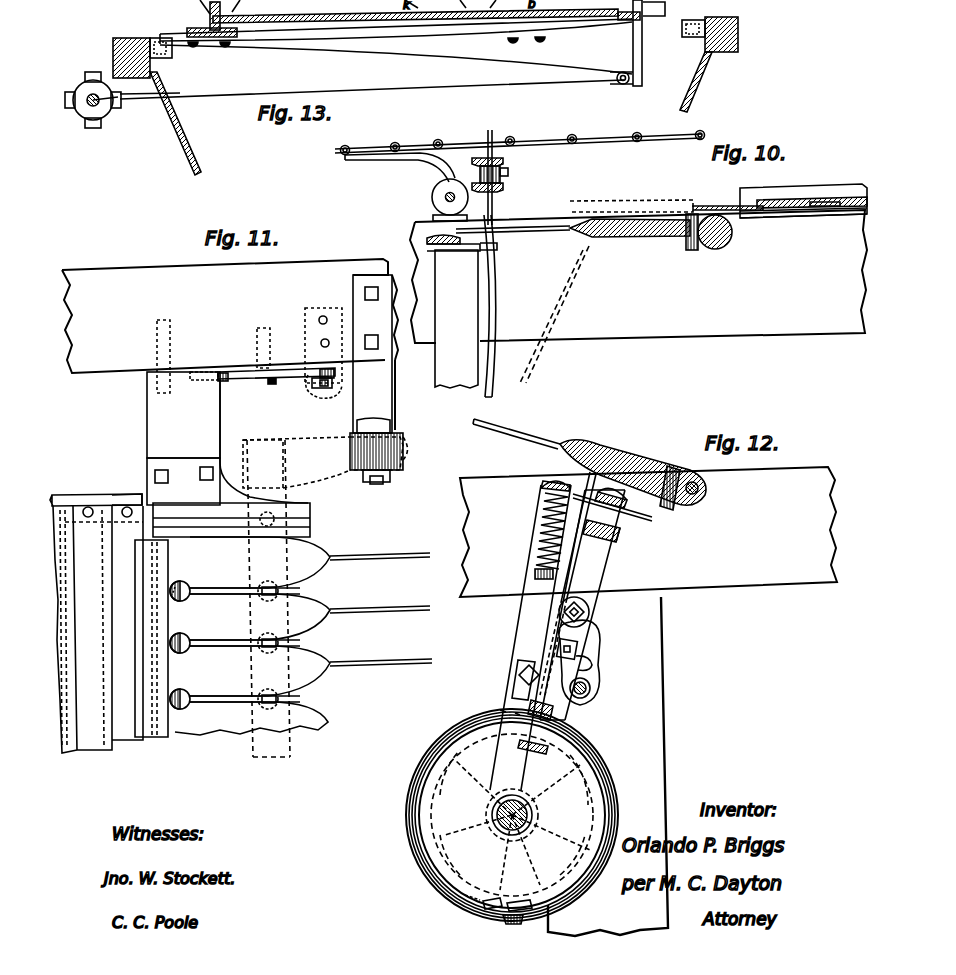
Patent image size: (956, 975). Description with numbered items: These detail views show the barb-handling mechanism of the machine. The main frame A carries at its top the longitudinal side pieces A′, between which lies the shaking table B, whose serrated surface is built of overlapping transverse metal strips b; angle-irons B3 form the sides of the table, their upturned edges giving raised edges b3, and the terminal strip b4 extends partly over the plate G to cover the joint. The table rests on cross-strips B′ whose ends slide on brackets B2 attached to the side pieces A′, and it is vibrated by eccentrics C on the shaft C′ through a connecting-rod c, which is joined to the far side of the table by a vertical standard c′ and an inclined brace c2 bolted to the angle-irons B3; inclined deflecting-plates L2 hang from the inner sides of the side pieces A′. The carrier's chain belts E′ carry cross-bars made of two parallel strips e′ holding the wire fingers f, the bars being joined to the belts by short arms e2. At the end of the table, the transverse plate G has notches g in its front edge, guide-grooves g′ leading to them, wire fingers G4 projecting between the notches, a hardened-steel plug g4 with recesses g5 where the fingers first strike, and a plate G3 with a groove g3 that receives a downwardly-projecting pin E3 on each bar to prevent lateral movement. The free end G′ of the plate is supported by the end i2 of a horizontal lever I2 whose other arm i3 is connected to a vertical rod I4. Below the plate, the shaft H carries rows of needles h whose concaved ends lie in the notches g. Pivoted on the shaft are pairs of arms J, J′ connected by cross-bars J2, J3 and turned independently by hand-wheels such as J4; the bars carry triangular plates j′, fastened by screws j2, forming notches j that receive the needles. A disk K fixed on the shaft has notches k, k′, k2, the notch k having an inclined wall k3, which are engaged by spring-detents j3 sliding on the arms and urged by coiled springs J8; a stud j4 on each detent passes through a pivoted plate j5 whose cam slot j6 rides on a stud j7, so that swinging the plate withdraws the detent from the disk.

In FIG. 13, the main frame A is at (735, 30).
In FIG. 13, the longitudinal side pieces A′ is at (112, 52).
In FIG. 10, the longitudinal side pieces A′ is at (638, 276).
In FIG. 11, the longitudinal side pieces A′ is at (230, 346).
In FIG. 12, the longitudinal side pieces A′ is at (648, 532).
In FIG. 10, the shaking table B is at (783, 200).
In FIG. 11, the shaking table B is at (138, 653).
In FIG. 13, the cross-strips B′ is at (562, 29).
In FIG. 13, the brackets B2 is at (166, 56).
In FIG. 10, the angle-irons B3 is at (804, 216).
In FIG. 11, the angle-irons B3 is at (103, 495).
In FIG. 13, the transverse metal strips b is at (415, 16).
In FIG. 10, the transverse metal strips b is at (853, 200).
In FIG. 11, the transverse metal strips b is at (98, 629).
In FIG. 10, the raised edges b3 is at (825, 200).
In FIG. 11, the raised edges b3 is at (135, 495).
In FIG. 10, the terminal strip b4 is at (718, 206).
In FIG. 11, the terminal strip b4 is at (165, 612).
In FIG. 13, the eccentrics C is at (78, 112).
In FIG. 13, the eccentric shaft C′ is at (103, 104).
In FIG. 13, the connecting-rod c is at (395, 88).
In FIG. 13, the vertical standard c′ is at (642, 44).
In FIG. 13, the inclined brace c2 is at (423, 52).
In FIG. 10, the chain belts E′ is at (592, 138).
In FIG. 11, the downwardly-projecting pin E3 is at (404, 468).
In FIG. 10, the parallel metal strips e′ is at (504, 160).
In FIG. 10, the short arms e2 is at (420, 166).
In FIG. 10, the fingers f is at (494, 200).
In FIG. 10, the transverse metal plate G is at (642, 236).
In FIG. 11, the transverse metal plate G is at (252, 636).
In FIG. 12, the transverse metal plate G is at (636, 462).
In FIG. 11, the end of the plate G′ is at (183, 415).
In FIG. 11, the guide plate G3 is at (320, 518).
In FIG. 10, the forwardly-projecting fingers G4 is at (527, 224).
In FIG. 11, the forwardly-projecting fingers G4 is at (402, 559).
In FIG. 12, the forwardly-projecting fingers G4 is at (533, 440).
In FIG. 11, the notches g is at (305, 590).
In FIG. 11, the transverse grooves g′ is at (226, 587).
In FIG. 11, the groove g3 is at (231, 519).
In FIG. 10, the hardened-steel plug g4 is at (694, 251).
In FIG. 11, the hardened-steel plug g4 is at (183, 602).
In FIG. 12, the hardened-steel plug g4 is at (672, 506).
In FIG. 10, the recesses g5 is at (690, 210).
In FIG. 11, the recesses g5 is at (188, 584).
In FIG. 12, the needle shaft H is at (525, 828).
In FIG. 10, the needles h is at (498, 298).
In FIG. 12, the needles h is at (597, 480).
In FIG. 11, the horizontal lever I2 is at (287, 378).
In FIG. 11, the vertical rod I4 is at (310, 392).
In FIG. 11, the lever end i2 is at (228, 381).
In FIG. 11, the lever arm i3 is at (334, 374).
In FIG. 12, the arm J is at (532, 553).
In FIG. 12, the arm J′ is at (582, 605).
In FIG. 12, the cross-bar J2 is at (558, 478).
In FIG. 12, the cross-bar J3 is at (632, 482).
In FIG. 12, the hand-wheel J4 is at (414, 790).
In FIG. 12, the coiled spring J8 is at (545, 518).
In FIG. 12, the triangular notches j is at (648, 512).
In FIG. 10, the triangular plates j′ is at (500, 250).
In FIG. 12, the triangular plates j′ is at (628, 525).
In FIG. 10, the screws j2 is at (460, 252).
In FIG. 12, the screws j2 is at (601, 525).
In FIG. 12, the spring-detents j3 is at (518, 698).
In FIG. 12, the stud j4 is at (590, 611).
In FIG. 12, the pivoted plate j5 is at (572, 642).
In FIG. 12, the cam slot j6 is at (600, 650).
In FIG. 12, the stud j7 is at (584, 657).
In FIG. 12, the disk K is at (512, 815).
In FIG. 12, the notch k is at (514, 898).
In FIG. 12, the notch k′ is at (490, 897).
In FIG. 12, the notch k2 is at (552, 750).
In FIG. 12, the inclined wall k3 is at (511, 925).
In FIG. 13, the deflecting-plates L2 is at (184, 130).